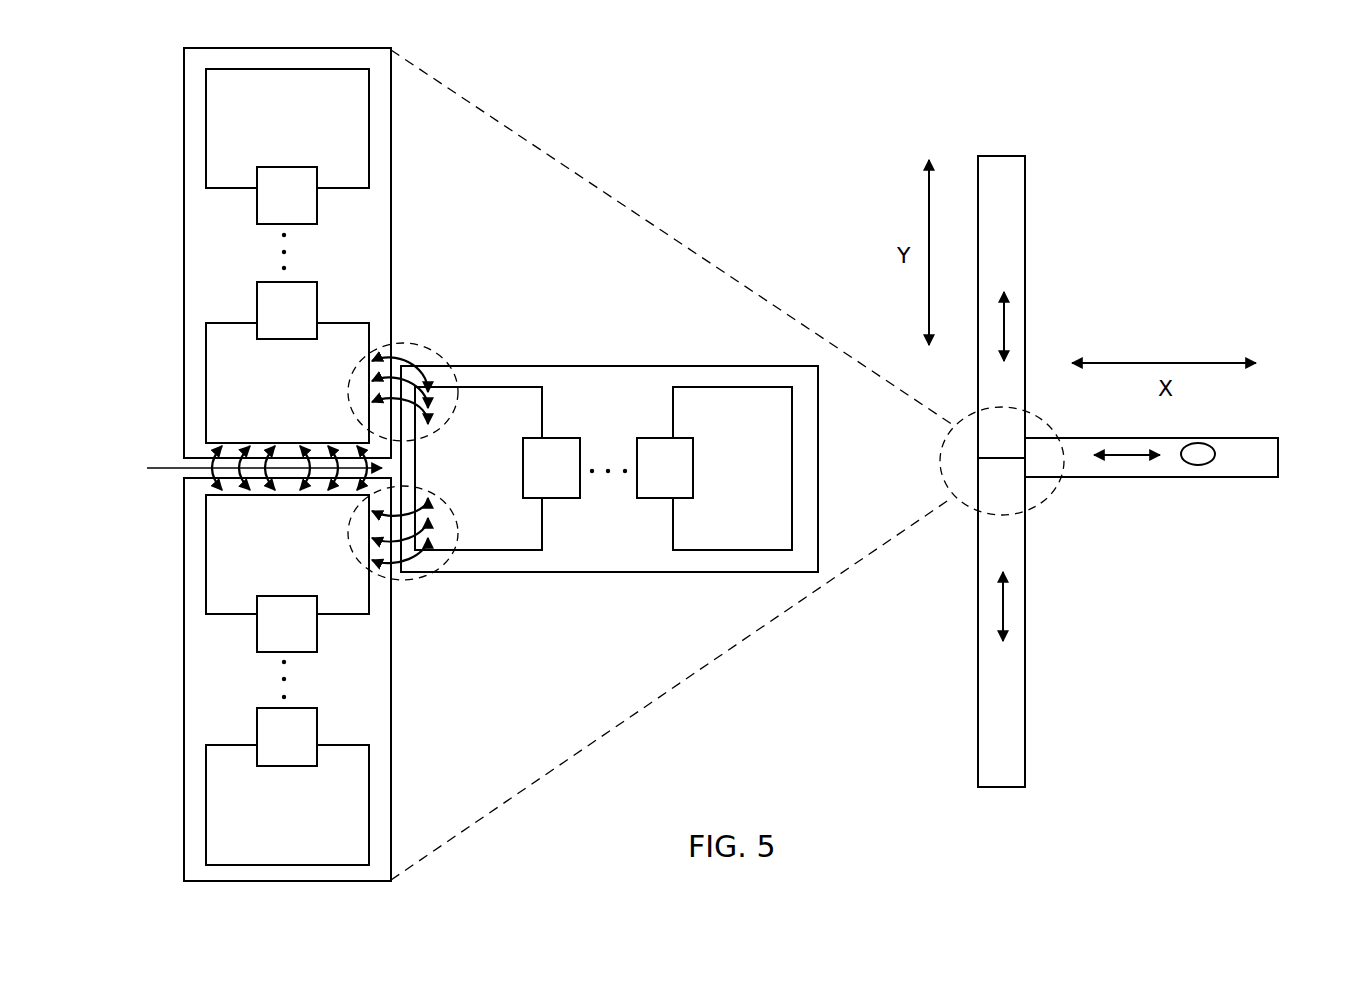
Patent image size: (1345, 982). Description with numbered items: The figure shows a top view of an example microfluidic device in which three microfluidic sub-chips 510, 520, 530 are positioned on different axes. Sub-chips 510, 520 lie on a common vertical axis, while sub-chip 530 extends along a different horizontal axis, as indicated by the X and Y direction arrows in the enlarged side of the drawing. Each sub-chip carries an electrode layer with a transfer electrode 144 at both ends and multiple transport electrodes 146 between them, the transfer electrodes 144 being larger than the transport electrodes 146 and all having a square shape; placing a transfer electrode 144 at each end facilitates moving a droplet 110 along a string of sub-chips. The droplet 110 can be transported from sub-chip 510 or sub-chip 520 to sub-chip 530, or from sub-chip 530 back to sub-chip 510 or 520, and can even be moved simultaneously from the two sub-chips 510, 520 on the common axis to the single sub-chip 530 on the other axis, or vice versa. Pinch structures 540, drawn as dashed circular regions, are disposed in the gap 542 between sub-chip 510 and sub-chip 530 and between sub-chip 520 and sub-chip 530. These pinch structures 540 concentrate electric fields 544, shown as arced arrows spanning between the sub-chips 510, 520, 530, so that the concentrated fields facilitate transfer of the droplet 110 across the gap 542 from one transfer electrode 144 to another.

The droplet 110 is at (1197, 465).
The transfer electrode 144 is at (205, 120).
The transport electrode 146 is at (258, 305).
The microfluidic sub-chip 510 is at (228, 48).
The microfluidic sub-chip 520 is at (220, 881).
The microfluidic sub-chip 530 is at (542, 366).
The pinch structure 540 is at (398, 345).
The gap 542 is at (244, 468).
The electric field 544 is at (213, 453).